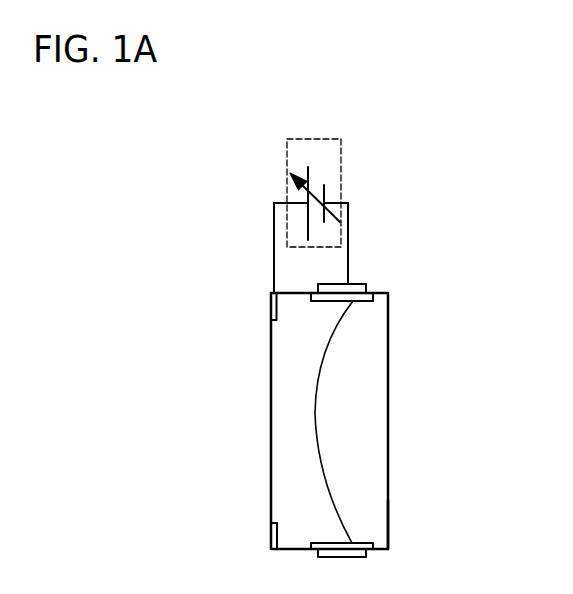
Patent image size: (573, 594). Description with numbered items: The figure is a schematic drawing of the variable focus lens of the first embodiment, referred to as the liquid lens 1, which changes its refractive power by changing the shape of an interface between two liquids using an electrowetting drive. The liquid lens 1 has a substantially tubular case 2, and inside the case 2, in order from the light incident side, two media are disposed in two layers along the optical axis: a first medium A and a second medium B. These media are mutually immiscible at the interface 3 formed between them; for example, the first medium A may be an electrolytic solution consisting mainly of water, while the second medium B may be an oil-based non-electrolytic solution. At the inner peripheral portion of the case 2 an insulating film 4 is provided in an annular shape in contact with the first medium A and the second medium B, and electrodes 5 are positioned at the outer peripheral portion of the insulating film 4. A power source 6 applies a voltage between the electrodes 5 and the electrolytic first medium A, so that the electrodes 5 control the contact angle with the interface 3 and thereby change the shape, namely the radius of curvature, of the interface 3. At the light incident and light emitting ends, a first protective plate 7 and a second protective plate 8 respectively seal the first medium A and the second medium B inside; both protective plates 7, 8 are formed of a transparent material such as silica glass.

The liquid lens 1 is at (467, 128).
The case 2 is at (387, 290).
The interface 3 is at (328, 489).
The insulating film 4 is at (358, 302).
The electrode 5 is at (358, 284).
The power source 6 is at (322, 138).
The first protective plate 7 is at (270, 503).
The second protective plate 8 is at (388, 523).
The first medium A is at (292, 405).
The second medium B is at (358, 418).